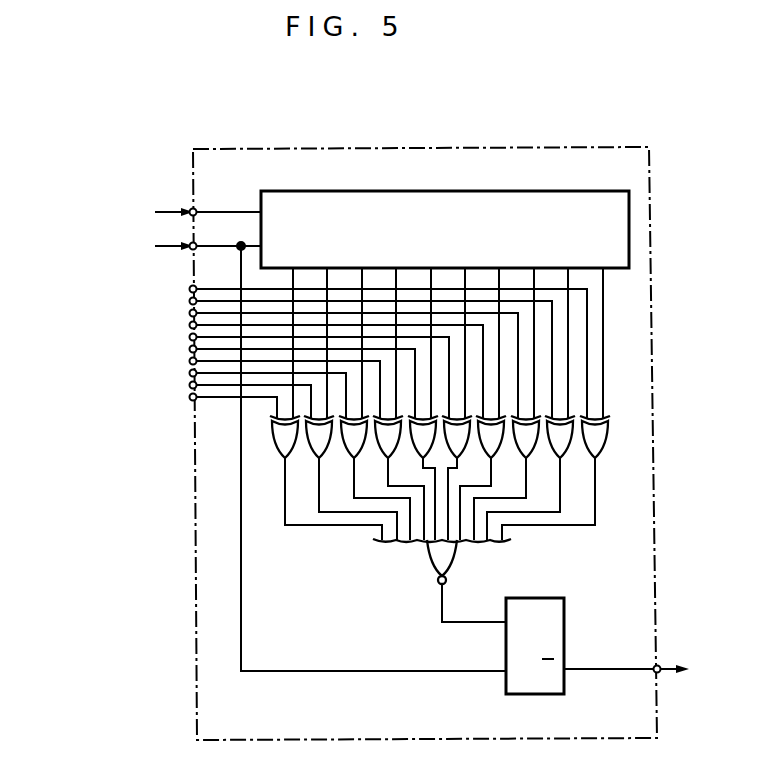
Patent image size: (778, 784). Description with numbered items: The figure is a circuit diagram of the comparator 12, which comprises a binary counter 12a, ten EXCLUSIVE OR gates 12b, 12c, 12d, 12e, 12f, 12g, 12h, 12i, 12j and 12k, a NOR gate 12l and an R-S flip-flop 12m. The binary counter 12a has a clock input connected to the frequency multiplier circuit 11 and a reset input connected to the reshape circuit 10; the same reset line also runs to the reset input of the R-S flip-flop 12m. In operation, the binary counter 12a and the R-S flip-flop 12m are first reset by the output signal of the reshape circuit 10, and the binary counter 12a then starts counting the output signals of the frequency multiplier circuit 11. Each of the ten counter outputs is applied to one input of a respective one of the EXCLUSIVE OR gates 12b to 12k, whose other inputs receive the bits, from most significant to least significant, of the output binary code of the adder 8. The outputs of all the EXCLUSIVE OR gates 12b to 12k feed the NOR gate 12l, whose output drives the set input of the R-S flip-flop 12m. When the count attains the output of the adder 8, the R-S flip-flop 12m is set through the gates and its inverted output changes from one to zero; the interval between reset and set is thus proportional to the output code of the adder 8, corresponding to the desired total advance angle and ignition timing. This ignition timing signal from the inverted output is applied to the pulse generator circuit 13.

The comparator 12 is at (462, 147).
The binary counter 12a is at (535, 191).
The EXCLUSIVE OR gate 12b is at (280, 455).
The EXCLUSIVE OR gate 12c is at (314, 455).
The EXCLUSIVE OR gate 12d is at (349, 455).
The EXCLUSIVE OR gate 12e is at (383, 455).
The EXCLUSIVE OR gate 12f is at (418, 455).
The EXCLUSIVE OR gate 12g is at (462, 455).
The EXCLUSIVE OR gate 12h is at (497, 455).
The EXCLUSIVE OR gate 12i is at (532, 455).
The EXCLUSIVE OR gate 12j is at (566, 455).
The EXCLUSIVE OR gate 12k is at (601, 455).
The NOR gate 12l is at (466, 562).
The R-S flip-flop 12m is at (564, 612).
The frequency multiplier circuit 11 is at (194, 213).
The reshape circuit 10 is at (316, 452).
The adder 8 is at (131, 284).
The pulse generator circuit 13 is at (641, 670).